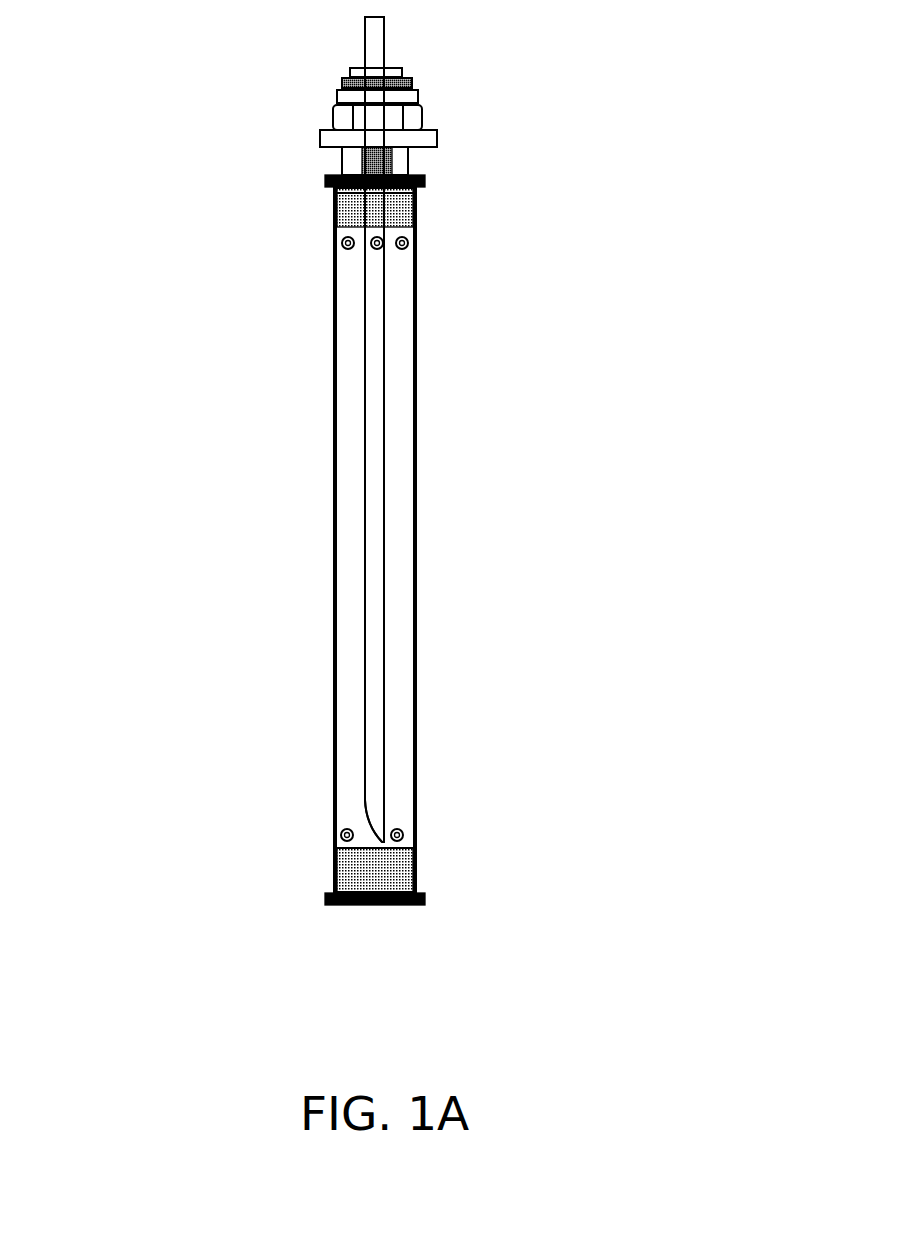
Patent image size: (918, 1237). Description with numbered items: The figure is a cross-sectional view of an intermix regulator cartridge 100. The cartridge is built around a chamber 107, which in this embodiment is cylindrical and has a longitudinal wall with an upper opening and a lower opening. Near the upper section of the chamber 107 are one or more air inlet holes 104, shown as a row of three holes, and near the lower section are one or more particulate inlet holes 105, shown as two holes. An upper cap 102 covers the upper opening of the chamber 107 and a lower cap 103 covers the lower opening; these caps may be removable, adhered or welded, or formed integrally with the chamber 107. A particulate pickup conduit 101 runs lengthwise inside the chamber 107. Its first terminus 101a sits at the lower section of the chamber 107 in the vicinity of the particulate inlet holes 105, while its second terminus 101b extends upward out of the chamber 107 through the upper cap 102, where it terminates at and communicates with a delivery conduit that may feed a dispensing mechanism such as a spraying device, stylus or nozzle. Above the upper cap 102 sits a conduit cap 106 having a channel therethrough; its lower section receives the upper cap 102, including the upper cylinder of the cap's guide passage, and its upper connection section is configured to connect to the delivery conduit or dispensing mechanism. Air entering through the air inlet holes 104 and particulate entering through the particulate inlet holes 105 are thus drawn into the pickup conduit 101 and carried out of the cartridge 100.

The intermix regulator cartridge 100 is at (200, 487).
The particulate pickup conduit 101 is at (365, 359).
The first terminus 101a is at (367, 821).
The second terminus 101b is at (365, 19).
The upper cap 102 is at (325, 181).
The lower cap 103 is at (325, 898).
The air inlet holes 104 is at (413, 243).
The particulate inlet holes 105 is at (405, 834).
The conduit cap 106 is at (420, 102).
The chamber 107 is at (417, 484).